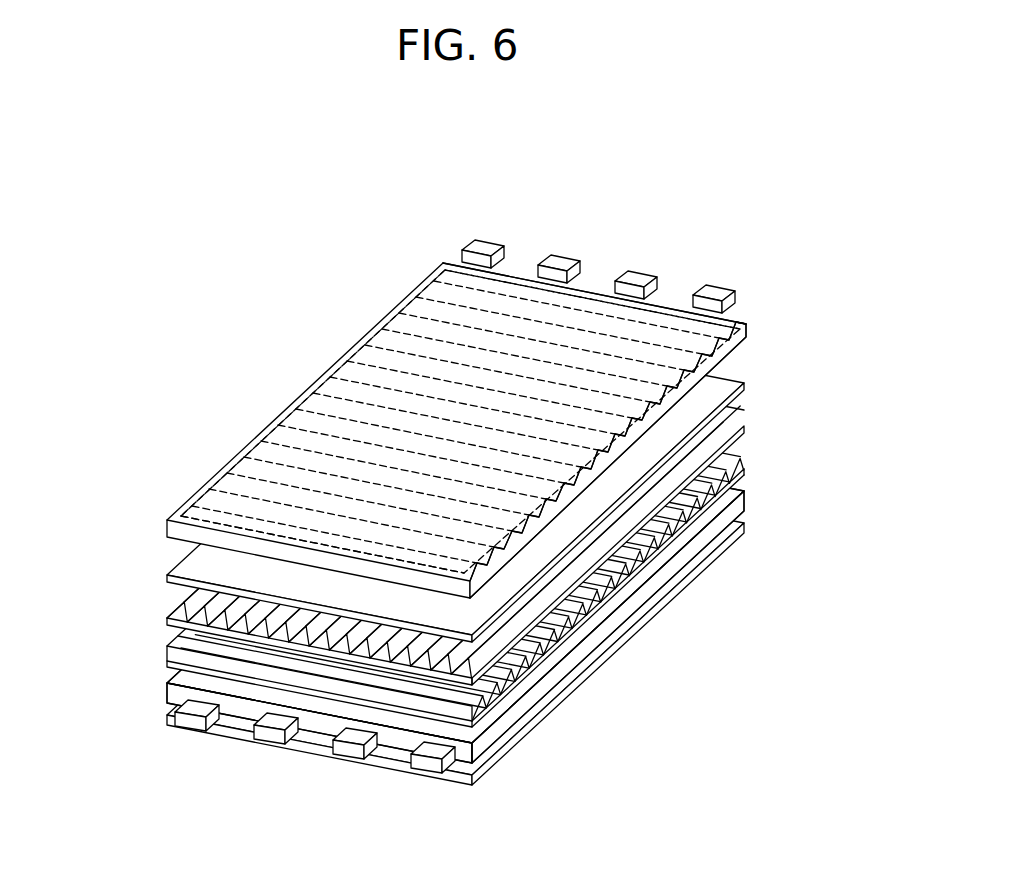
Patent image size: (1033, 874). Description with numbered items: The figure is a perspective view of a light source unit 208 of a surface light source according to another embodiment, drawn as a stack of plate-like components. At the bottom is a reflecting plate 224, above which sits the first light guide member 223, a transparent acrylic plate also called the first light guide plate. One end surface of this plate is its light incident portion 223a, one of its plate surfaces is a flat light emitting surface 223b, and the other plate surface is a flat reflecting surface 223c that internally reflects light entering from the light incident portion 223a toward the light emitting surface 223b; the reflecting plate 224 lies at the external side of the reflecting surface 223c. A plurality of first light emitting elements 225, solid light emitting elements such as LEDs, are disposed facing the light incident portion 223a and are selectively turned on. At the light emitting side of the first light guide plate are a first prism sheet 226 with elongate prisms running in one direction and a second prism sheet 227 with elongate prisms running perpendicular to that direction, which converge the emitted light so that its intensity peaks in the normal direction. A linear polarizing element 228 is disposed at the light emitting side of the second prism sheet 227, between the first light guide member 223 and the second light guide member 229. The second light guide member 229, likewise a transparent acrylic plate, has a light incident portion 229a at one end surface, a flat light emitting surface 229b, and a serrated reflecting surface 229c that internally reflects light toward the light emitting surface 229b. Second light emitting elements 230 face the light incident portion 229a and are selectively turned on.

The light source unit 208 is at (461, 520).
The first light guide member 223 is at (553, 673).
The light incident portion 223a is at (462, 752).
The light emitting surface 223b is at (653, 562).
The reflecting surface 223c is at (622, 627).
The reflecting plate 224 is at (522, 740).
The first light emitting elements 225 is at (263, 741).
The first prism sheet 226 is at (165, 653).
The second prism sheet 227 is at (168, 610).
The linear polarizing element 228 is at (185, 563).
The second light guide member 229 is at (310, 385).
The light incident portion 229a is at (747, 328).
The light emitting surface 229b is at (373, 327).
The reflecting surface 229c is at (733, 360).
The second light emitting elements 230 is at (482, 248).